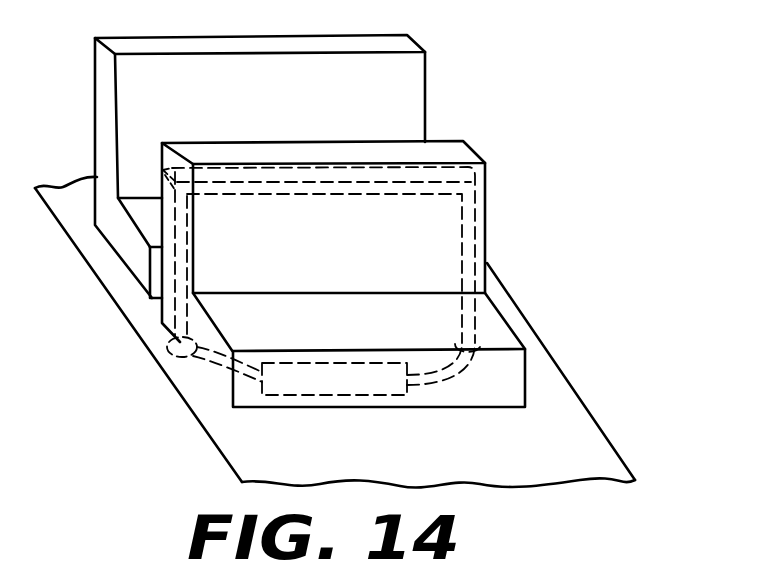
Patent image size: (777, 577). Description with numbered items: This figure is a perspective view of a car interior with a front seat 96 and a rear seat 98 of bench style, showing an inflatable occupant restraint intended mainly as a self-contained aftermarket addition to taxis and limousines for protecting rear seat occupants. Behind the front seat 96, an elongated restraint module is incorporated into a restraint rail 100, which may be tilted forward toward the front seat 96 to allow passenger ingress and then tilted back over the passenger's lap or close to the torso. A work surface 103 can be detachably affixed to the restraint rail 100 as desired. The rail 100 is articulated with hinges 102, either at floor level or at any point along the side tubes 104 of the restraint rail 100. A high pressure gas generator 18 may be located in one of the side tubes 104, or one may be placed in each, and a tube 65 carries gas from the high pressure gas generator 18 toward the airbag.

The high pressure gas generator 18 is at (333, 392).
The tube 65 is at (253, 380).
The front seat 96 is at (490, 322).
The rear seat 98 is at (408, 91).
The restraint rail 100 is at (269, 193).
The hinge 102 is at (168, 347).
The work surface 103 is at (170, 163).
The side tube 104 is at (176, 278).